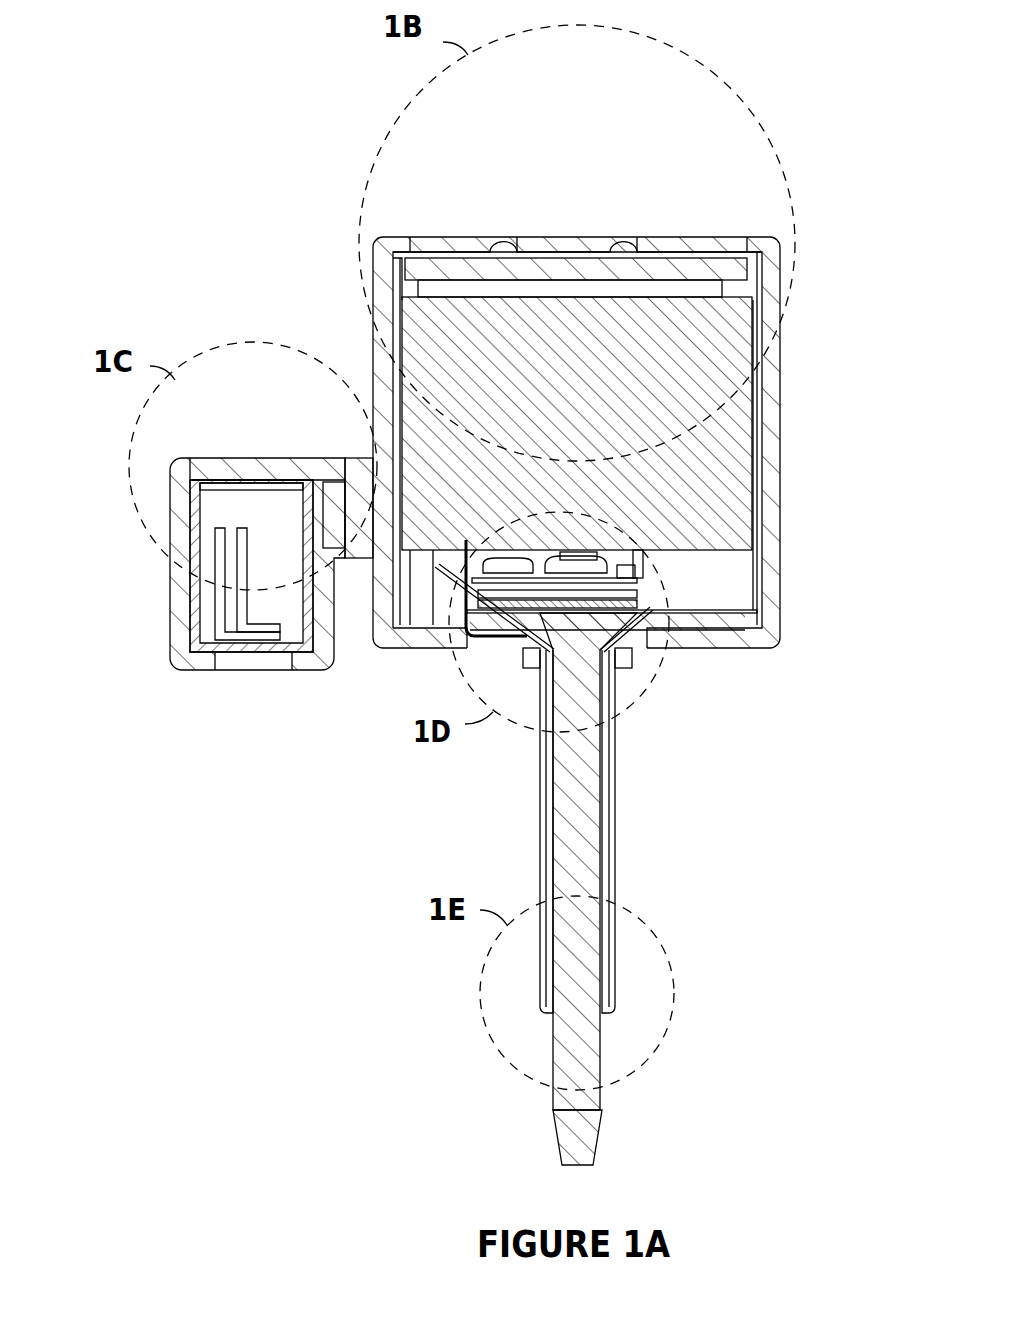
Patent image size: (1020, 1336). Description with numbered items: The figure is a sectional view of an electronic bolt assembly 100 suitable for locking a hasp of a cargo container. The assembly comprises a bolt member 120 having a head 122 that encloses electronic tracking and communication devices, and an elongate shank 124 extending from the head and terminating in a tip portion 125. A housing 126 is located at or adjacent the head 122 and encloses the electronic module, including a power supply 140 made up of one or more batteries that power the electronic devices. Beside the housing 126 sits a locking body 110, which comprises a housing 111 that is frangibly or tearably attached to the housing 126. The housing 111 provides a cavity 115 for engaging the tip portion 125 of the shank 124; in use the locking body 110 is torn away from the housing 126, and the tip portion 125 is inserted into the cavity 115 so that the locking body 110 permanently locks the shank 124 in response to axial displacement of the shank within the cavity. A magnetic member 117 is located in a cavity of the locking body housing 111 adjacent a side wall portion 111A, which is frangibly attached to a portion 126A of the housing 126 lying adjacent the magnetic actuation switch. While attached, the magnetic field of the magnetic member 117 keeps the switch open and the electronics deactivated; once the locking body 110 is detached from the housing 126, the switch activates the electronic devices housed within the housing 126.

The electronic bolt assembly 100 is at (318, 303).
The locking body 110 is at (177, 657).
The housing 111 is at (180, 578).
The side wall portion 111A is at (358, 523).
The cavity 115 is at (260, 595).
The magnetic member 117 is at (327, 487).
The bolt member 120 is at (612, 757).
The head 122 is at (612, 575).
The shank 124 is at (563, 880).
The tip portion 125 is at (593, 1115).
The housing 126 is at (392, 335).
The portion 126A is at (440, 440).
The power supply 140 is at (662, 337).